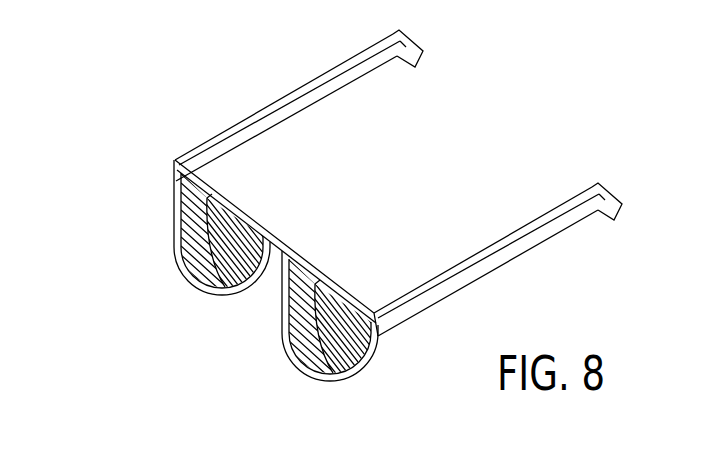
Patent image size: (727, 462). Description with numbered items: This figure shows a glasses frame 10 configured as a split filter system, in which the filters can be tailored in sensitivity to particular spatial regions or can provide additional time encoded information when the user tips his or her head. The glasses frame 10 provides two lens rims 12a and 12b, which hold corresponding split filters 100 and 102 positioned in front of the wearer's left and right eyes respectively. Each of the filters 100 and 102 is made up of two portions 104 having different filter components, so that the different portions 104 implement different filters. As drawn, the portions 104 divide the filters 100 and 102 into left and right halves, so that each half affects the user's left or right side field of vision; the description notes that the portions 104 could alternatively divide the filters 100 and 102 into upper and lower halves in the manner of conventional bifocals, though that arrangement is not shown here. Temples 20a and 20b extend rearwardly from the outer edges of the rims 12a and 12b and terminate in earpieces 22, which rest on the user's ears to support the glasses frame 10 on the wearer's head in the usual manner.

The glasses frame 10 is at (125, 105).
The split filter 100 is at (145, 225).
The split filter 102 is at (275, 338).
The portions 104 is at (215, 176).
The lens rim 12a is at (200, 281).
The lens rim 12b is at (325, 379).
The temple 20a is at (308, 100).
The temple 20b is at (507, 255).
The earpieces 22 is at (415, 42).